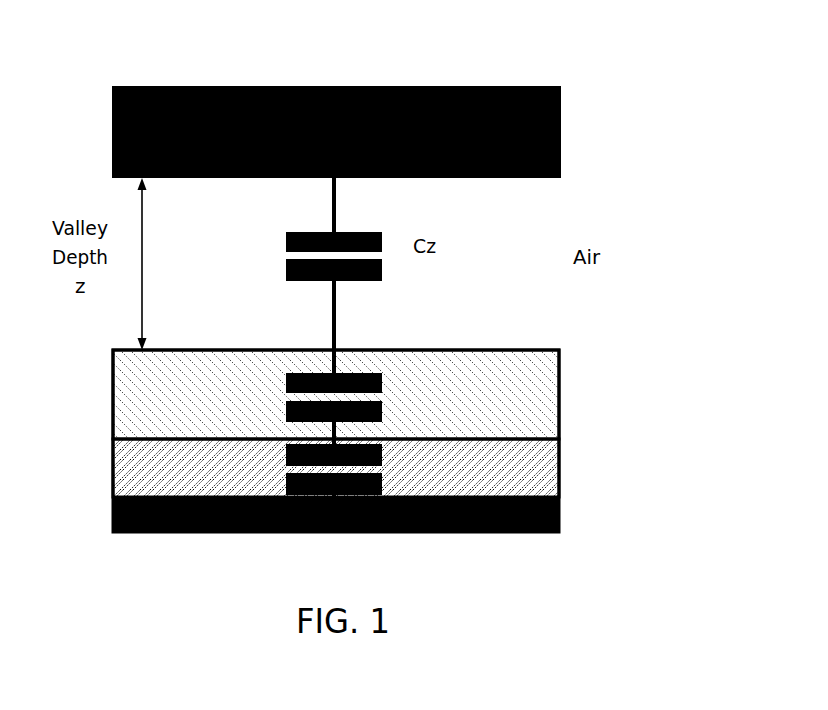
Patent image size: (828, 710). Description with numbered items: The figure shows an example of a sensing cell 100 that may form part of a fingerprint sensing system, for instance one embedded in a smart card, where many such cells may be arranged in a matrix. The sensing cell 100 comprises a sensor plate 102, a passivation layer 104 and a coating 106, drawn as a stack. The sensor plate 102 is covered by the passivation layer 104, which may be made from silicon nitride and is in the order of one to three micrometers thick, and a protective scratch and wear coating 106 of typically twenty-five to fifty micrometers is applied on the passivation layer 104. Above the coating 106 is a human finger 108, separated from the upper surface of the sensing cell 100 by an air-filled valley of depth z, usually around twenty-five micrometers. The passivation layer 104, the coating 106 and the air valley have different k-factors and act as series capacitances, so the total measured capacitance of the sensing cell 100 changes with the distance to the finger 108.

The sensing cell 100 is at (683, 352).
The sensor plate 102 is at (113, 517).
The passivation layer 104 is at (113, 477).
The coating 106 is at (113, 403).
The finger 108 is at (258, 86).